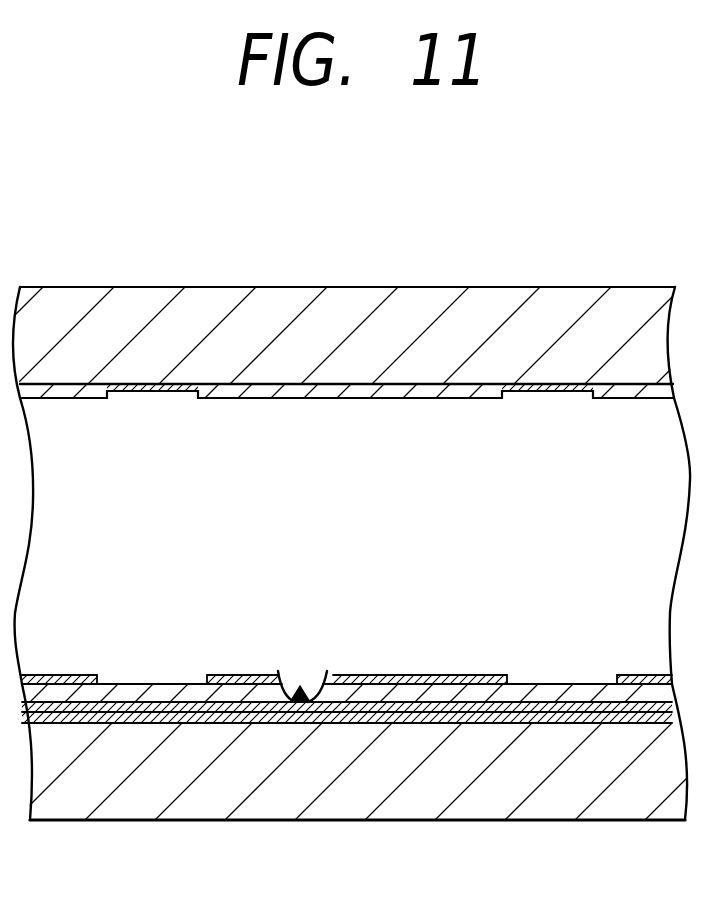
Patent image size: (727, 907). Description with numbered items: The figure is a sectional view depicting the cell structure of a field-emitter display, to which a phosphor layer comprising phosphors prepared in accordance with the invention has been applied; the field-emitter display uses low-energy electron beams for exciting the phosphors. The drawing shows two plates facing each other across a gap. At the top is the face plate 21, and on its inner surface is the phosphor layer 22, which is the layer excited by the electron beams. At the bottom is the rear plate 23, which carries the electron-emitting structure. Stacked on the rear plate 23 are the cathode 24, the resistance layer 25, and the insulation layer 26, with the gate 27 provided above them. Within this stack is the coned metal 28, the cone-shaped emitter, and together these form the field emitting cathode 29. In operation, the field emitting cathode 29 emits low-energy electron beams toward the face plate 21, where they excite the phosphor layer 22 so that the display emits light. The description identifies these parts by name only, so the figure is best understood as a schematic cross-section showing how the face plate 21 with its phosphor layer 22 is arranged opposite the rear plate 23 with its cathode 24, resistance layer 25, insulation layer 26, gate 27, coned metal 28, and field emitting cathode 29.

The face plate 21 is at (497, 312).
The phosphor layer 22 is at (254, 392).
The rear plate 23 is at (530, 810).
The cathode 24 is at (420, 713).
The resistance layer 25 is at (550, 696).
The insulation layer 26 is at (598, 718).
The gate 27 is at (410, 678).
The coned metal 28 is at (300, 676).
The field emitting cathode 29 is at (150, 696).